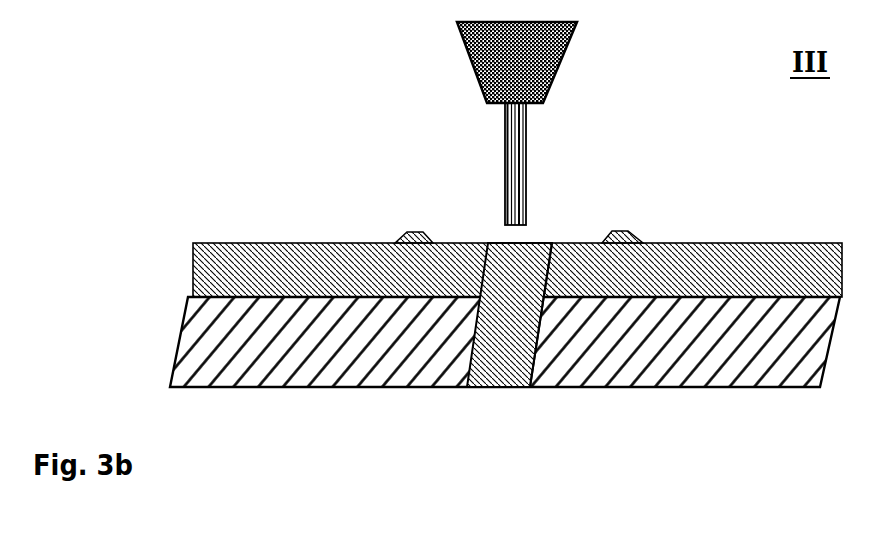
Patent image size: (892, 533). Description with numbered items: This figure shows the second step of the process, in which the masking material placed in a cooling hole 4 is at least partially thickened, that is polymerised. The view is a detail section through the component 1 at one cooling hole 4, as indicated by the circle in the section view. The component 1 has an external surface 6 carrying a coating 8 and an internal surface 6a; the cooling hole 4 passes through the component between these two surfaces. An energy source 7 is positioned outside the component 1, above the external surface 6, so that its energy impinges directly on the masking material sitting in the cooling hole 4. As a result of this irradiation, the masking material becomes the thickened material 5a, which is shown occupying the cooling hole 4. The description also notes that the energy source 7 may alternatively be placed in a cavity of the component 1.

The component 1 is at (680, 222).
The cooling hole 4 is at (539, 384).
The thickened material 5a is at (500, 363).
The external surface 6 is at (324, 243).
The internal surface 6a is at (323, 387).
The energy source 7 is at (540, 60).
The coating 8 is at (229, 278).